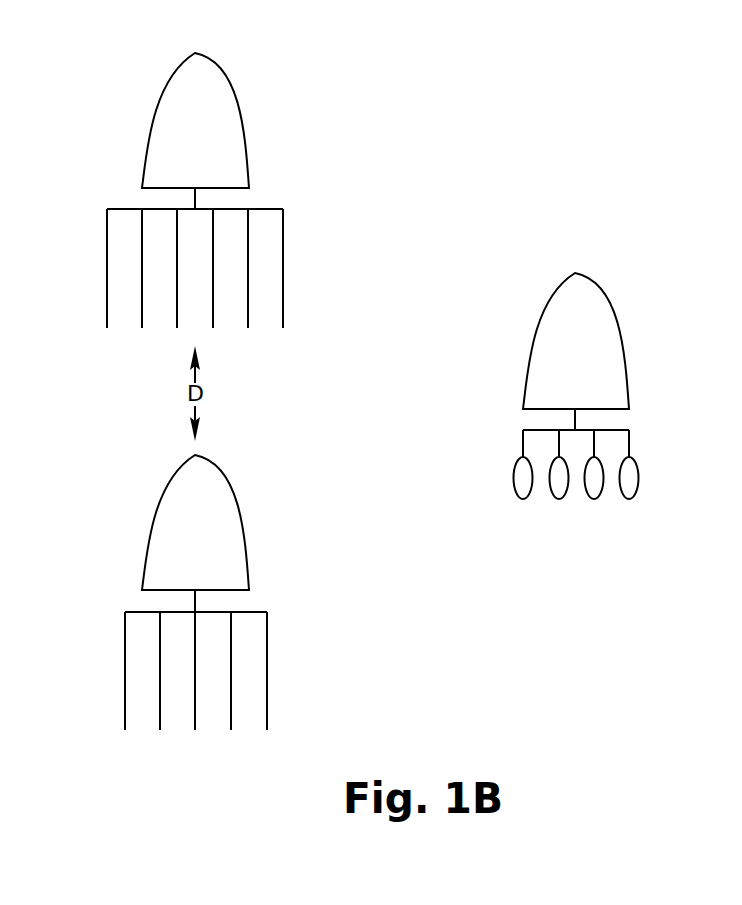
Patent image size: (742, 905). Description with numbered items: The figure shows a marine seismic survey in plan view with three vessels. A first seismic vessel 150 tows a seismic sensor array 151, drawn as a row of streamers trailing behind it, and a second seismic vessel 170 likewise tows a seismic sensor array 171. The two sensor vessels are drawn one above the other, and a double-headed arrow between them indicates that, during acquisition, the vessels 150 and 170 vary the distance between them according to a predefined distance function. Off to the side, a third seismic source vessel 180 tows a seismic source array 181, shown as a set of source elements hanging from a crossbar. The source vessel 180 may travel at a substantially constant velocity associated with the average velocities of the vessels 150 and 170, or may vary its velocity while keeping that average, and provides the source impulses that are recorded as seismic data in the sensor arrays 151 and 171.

The first seismic vessel 150 is at (213, 78).
The seismic sensor array 151 is at (302, 244).
The second seismic vessel 170 is at (213, 480).
The seismic sensor array 171 is at (302, 649).
The seismic source vessel 180 is at (593, 298).
The seismic source array 181 is at (650, 462).